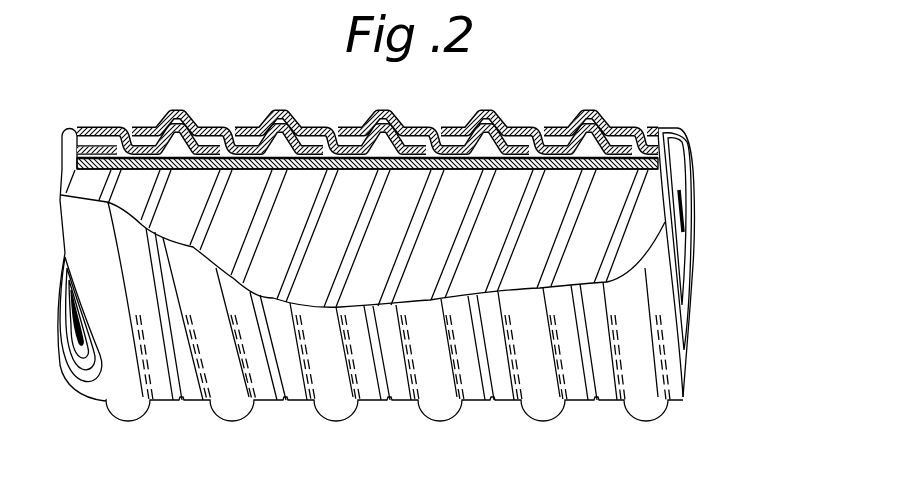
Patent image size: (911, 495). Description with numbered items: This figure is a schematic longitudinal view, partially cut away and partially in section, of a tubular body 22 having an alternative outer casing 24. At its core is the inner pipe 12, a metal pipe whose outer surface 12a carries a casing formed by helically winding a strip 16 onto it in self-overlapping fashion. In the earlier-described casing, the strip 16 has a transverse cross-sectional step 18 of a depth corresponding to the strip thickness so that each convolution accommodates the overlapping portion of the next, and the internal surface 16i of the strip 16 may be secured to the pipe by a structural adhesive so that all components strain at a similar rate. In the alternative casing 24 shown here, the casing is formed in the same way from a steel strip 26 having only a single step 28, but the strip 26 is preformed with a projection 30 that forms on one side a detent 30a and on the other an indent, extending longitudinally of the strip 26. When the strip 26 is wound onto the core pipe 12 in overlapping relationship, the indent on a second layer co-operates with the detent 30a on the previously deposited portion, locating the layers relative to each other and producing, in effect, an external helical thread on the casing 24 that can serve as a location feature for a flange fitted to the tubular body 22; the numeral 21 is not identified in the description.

The inner pipe 12 is at (523, 162).
The outer surface of the pipe 12a is at (152, 159).
The strip 16 is at (136, 131).
The internal surface of the strip 16i is at (105, 112).
The transverse cross-sectional step 18 is at (226, 129).
The bonding layer 21 is at (399, 103).
The tubular body 22 is at (198, 403).
The alternative outer casing 24 is at (607, 128).
The steel strip 26 is at (412, 128).
The single step 28 is at (328, 143).
The projection 30 is at (284, 108).
The detent 30a is at (482, 127).